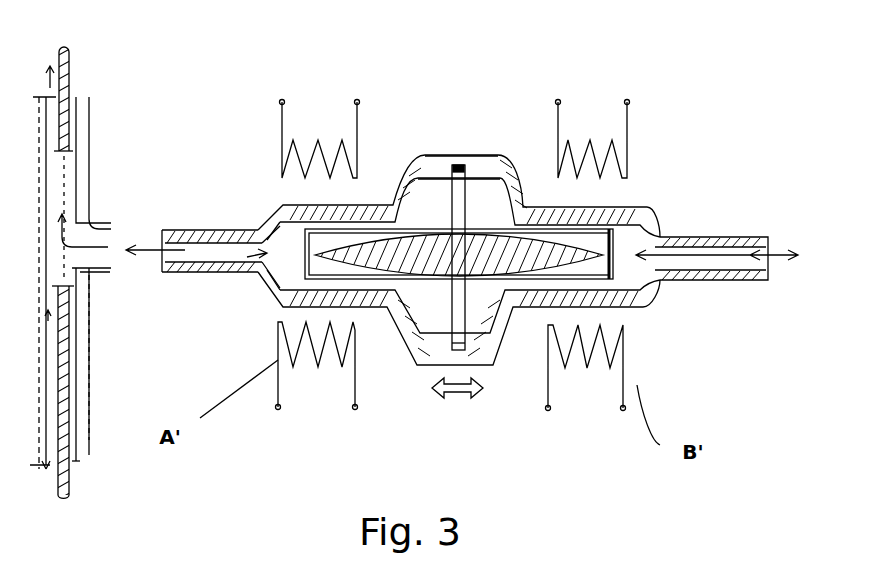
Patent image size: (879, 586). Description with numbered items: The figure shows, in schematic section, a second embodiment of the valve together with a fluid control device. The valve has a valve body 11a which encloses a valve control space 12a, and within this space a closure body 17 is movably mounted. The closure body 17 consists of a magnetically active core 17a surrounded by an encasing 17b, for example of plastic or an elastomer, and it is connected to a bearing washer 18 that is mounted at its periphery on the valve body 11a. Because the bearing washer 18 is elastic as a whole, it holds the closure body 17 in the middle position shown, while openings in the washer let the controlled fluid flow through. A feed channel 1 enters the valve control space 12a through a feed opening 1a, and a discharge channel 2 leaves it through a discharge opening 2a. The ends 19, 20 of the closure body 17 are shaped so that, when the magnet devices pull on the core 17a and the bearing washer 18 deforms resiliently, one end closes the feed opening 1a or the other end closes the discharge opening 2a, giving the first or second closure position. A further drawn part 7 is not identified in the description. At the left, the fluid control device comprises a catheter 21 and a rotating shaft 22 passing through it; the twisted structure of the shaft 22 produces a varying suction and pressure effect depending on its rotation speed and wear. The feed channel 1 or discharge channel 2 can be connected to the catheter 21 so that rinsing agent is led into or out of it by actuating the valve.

The feed channel 1 is at (212, 253).
The feed opening 1a is at (247, 257).
The discharge channel 2 is at (740, 282).
The discharge opening 2a is at (740, 247).
The housing 7 is at (267, 212).
The valve body 11a is at (500, 154).
The valve control space 12a is at (507, 182).
The closure body 17 is at (650, 292).
The magnetically active core 17a is at (590, 238).
The encasing 17b is at (655, 240).
The bearing washer 18 is at (460, 172).
The end of the closure body 19 is at (640, 262).
The end of the closure body 20 is at (303, 267).
The catheter 21 is at (91, 128).
The rotating shaft 22 is at (72, 66).